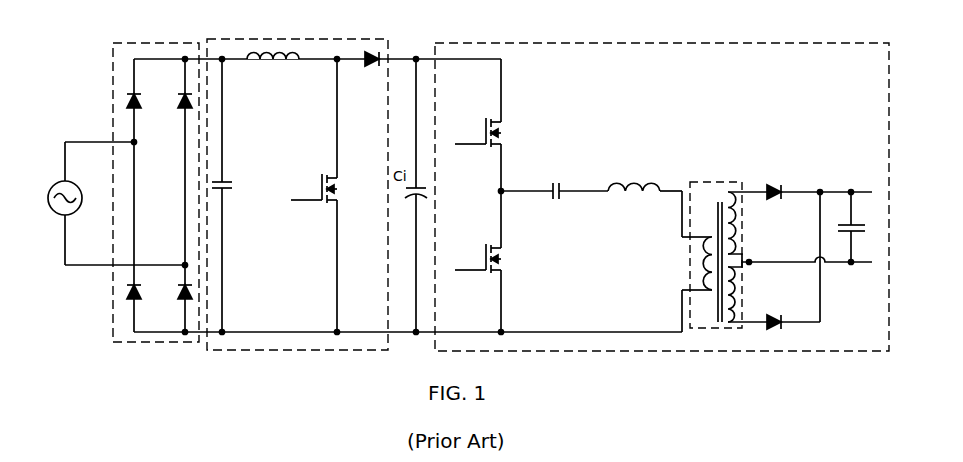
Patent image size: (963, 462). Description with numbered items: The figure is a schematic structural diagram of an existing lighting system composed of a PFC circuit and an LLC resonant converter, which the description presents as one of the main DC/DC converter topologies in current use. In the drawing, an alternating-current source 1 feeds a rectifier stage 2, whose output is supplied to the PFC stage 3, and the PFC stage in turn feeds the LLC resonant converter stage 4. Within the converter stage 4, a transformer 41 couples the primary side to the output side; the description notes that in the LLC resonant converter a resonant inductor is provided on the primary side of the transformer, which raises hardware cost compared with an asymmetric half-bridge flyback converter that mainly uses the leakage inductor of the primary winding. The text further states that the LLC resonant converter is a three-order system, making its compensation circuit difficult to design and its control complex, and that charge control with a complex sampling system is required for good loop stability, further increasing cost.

The AC power source 1 is at (51, 181).
The rectifier bridge 2 is at (153, 43).
The power factor correction boost stage 3 is at (232, 36).
The DC-DC resonant converter stage 4 is at (662, 183).
The transformer 41 is at (708, 181).